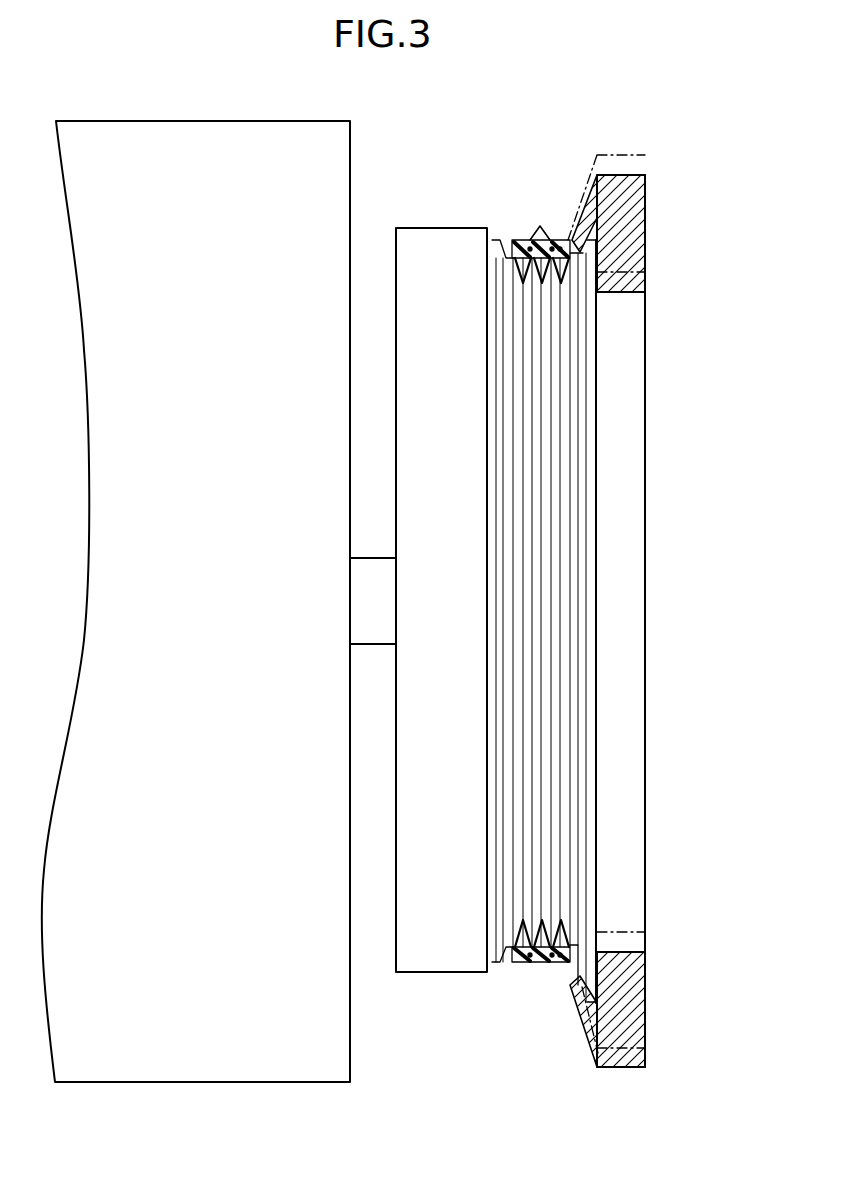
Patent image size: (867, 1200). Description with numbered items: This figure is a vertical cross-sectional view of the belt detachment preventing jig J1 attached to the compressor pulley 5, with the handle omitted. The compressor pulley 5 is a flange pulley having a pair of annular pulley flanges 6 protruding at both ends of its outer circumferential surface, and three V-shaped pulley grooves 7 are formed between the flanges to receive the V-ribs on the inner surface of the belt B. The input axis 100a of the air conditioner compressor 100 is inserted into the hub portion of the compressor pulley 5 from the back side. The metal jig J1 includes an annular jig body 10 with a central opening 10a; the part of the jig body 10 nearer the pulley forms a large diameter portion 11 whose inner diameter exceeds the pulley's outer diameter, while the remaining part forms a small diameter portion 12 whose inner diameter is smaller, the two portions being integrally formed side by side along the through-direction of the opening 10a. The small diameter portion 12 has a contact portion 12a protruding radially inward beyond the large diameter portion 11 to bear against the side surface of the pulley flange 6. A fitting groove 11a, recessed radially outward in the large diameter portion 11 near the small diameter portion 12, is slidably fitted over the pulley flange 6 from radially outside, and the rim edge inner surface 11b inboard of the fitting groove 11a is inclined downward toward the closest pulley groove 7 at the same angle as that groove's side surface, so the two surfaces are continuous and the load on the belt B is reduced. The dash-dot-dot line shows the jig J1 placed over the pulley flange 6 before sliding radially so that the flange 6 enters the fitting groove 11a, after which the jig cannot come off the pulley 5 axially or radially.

The air conditioner compressor 100 is at (215, 1063).
The input axis 100a is at (373, 634).
The compressor pulley 5 is at (608, 562).
The pulley flange 6 is at (495, 240).
The pulley groove 7 is at (540, 226).
The belt B is at (526, 232).
The belt detachment preventing jig J1 is at (627, 613).
The jig body 10 is at (627, 613).
The opening 10a is at (620, 413).
The large diameter portion 11 is at (613, 613).
The fitting groove 11a is at (599, 258).
The rim edge inner surface 11b is at (587, 200).
The small diameter portion 12 is at (660, 613).
The contact portion 12a is at (650, 255).